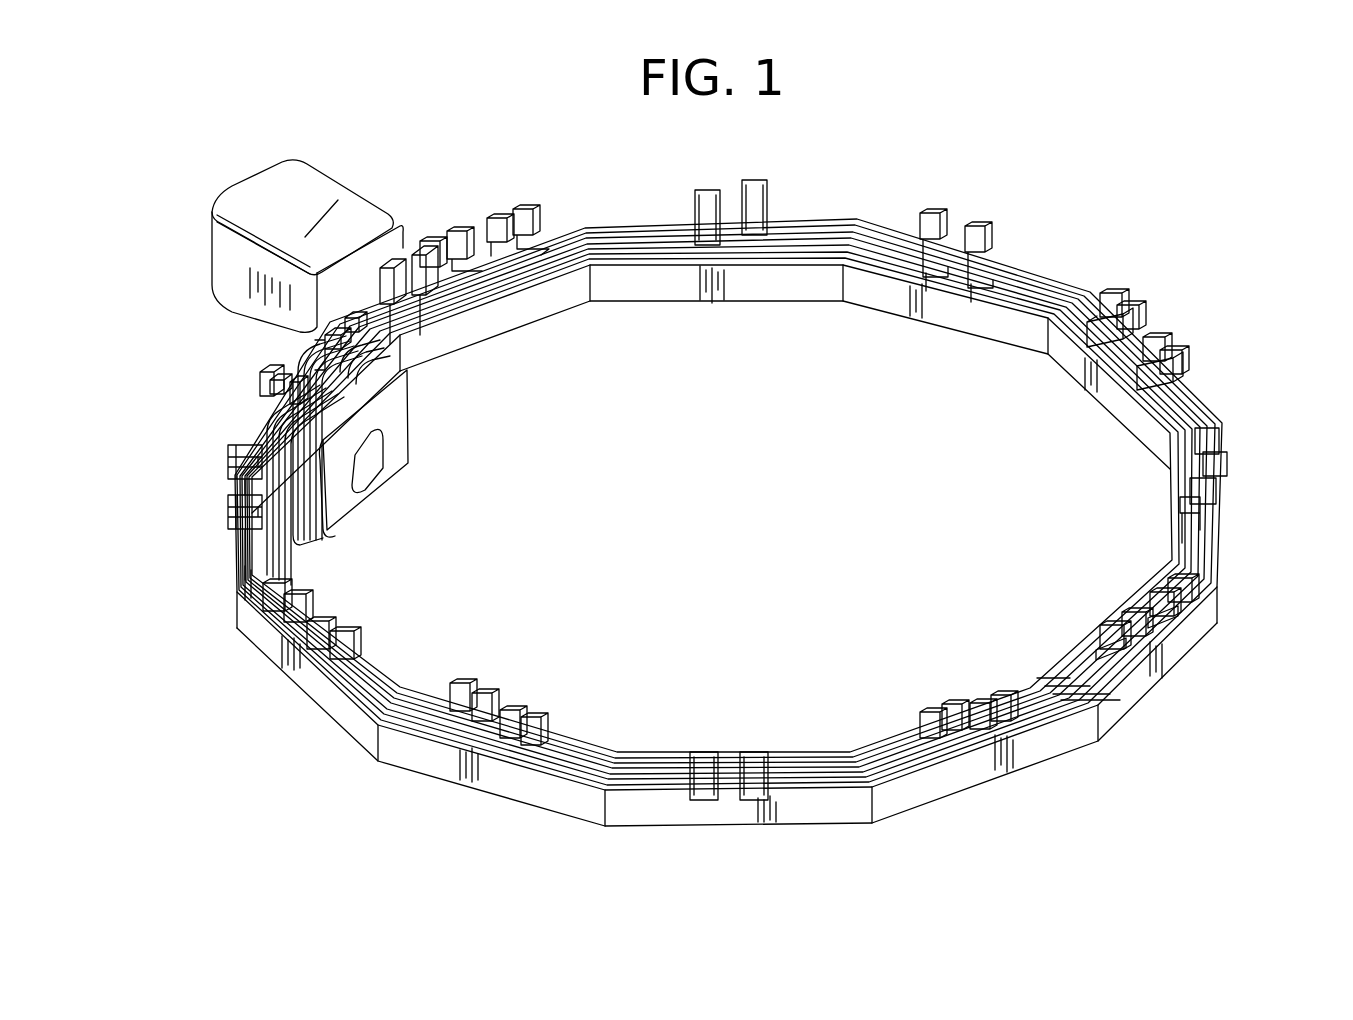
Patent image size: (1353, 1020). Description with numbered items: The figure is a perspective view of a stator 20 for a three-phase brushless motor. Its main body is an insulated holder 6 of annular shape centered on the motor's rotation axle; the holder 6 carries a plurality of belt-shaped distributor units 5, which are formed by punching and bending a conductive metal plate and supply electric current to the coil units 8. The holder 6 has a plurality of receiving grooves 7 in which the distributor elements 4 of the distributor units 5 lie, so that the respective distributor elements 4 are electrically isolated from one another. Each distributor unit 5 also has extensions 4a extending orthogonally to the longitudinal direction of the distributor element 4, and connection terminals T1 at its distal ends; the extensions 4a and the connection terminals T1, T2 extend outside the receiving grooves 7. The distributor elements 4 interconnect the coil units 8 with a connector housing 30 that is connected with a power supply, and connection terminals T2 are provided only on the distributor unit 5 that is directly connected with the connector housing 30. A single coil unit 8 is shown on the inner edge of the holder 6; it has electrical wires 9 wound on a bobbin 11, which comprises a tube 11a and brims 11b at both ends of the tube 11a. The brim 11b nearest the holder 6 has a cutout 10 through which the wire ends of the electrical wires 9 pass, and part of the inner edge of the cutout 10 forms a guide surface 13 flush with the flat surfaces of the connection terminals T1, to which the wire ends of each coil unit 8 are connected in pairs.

The stator 20 is at (1226, 164).
The holder 6 is at (820, 800).
The receiving grooves 7 is at (838, 778).
The connection terminals T1 is at (450, 240).
The connection terminals T2 is at (393, 270).
The distributor element 4 is at (232, 455).
The extensions 4a is at (230, 505).
The distributor units 5 is at (108, 185).
The connector housing 30 is at (268, 193).
The coil unit 8 is at (402, 490).
The electrical wires 9 is at (365, 405).
The cutout 10 is at (350, 520).
The bobbin 11 is at (412, 456).
The tube 11a is at (290, 535).
The brims 11b is at (400, 442).
The guide surface 13 is at (265, 378).